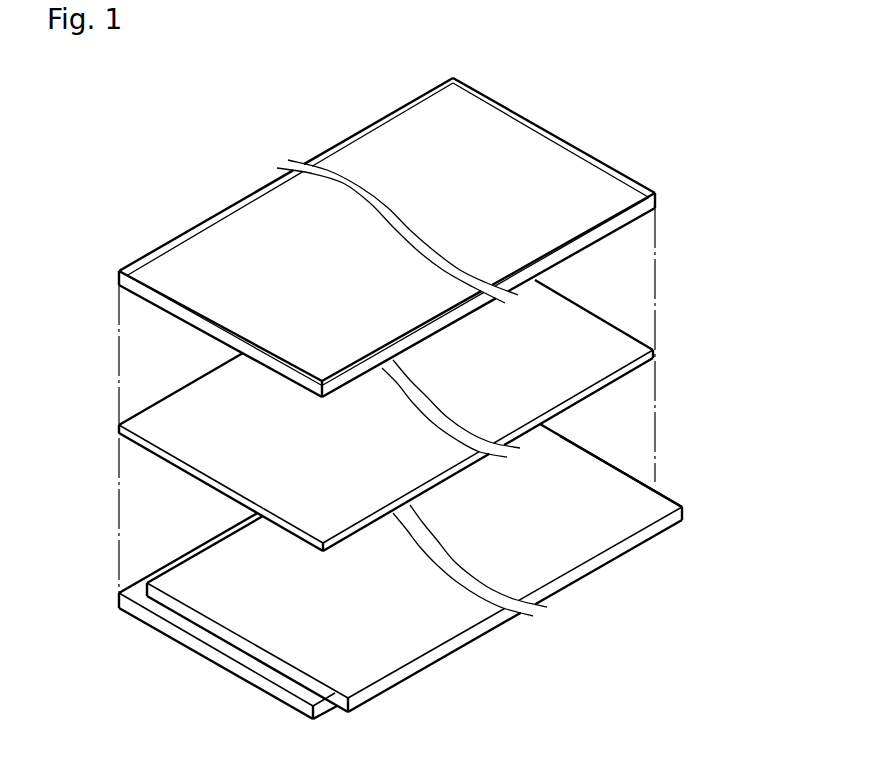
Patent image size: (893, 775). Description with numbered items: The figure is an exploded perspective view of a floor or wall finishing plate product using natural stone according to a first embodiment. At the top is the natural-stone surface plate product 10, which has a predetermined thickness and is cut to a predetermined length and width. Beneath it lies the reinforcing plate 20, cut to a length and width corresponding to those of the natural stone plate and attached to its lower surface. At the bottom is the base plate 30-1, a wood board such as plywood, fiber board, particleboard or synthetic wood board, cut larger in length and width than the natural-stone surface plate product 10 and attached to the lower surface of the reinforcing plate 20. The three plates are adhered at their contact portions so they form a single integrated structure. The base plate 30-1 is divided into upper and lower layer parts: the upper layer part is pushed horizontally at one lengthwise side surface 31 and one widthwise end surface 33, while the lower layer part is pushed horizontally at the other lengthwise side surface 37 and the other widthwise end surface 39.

The natural-stone surface plate product 10 is at (618, 191).
The reinforcing plate 20 is at (626, 348).
The base plate 30-1 is at (415, 579).
The one lengthwise side surface 31 is at (145, 580).
The one widthwise end surface 33 is at (217, 653).
The other lengthwise side surface 37 is at (400, 675).
The other widthwise end surface 39 is at (643, 484).